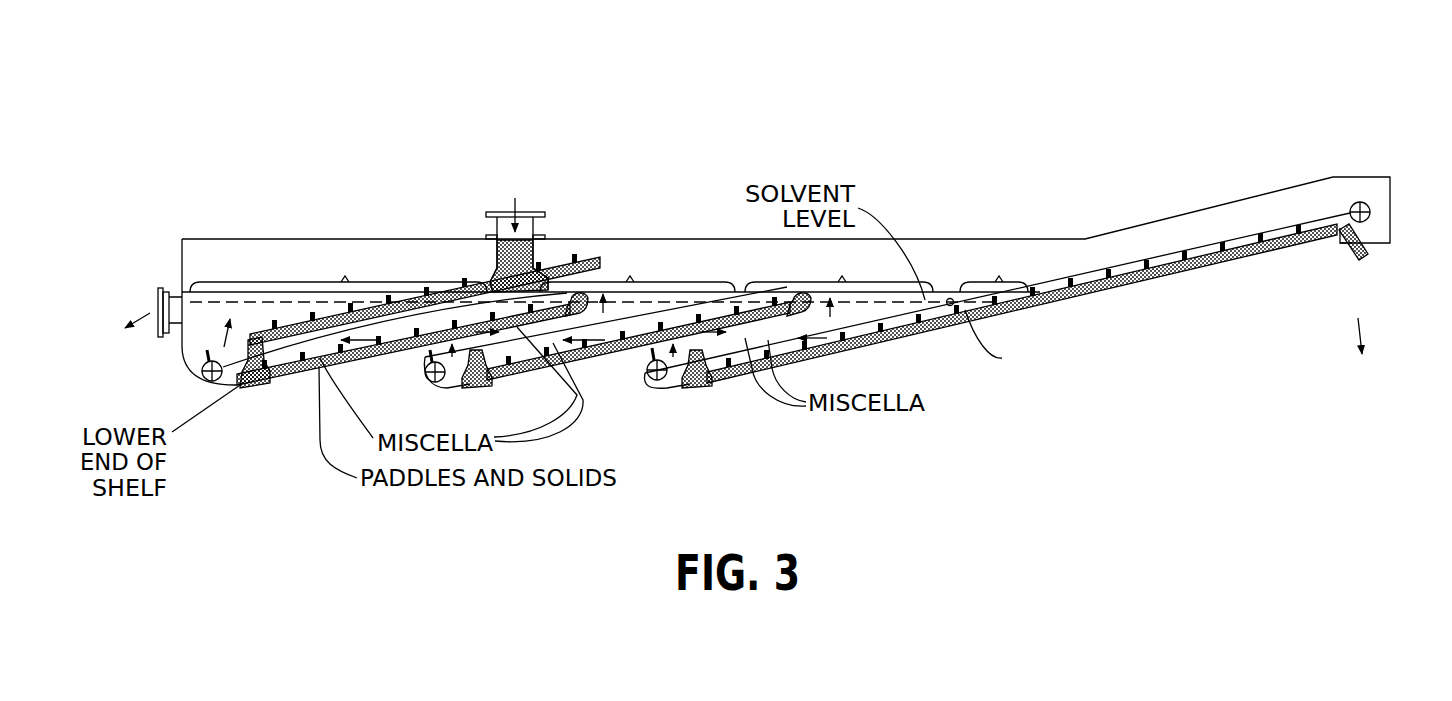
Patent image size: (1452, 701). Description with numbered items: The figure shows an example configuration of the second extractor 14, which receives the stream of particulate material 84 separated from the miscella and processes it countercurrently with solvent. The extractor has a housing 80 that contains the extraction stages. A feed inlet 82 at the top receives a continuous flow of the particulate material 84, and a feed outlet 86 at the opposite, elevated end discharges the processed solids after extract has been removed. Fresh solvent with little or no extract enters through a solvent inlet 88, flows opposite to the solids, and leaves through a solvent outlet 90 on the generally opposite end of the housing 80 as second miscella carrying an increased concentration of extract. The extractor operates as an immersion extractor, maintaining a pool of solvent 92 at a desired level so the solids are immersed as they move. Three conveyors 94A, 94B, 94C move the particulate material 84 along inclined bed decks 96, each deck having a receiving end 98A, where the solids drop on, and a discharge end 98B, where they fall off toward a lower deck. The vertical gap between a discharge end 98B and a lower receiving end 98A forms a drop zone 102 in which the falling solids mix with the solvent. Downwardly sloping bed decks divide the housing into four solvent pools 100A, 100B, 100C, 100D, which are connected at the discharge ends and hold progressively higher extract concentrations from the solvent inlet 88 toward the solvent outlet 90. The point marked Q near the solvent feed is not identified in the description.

The second extractor 14 is at (197, 130).
The housing 80 is at (182, 262).
The feed inlet 82 is at (532, 194).
The particulate material 84 is at (493, 262).
The feed outlet 86 is at (1383, 330).
The solvent inlet 88 is at (950, 298).
The solvent outlet 90 is at (158, 326).
The pool of solvent 92 is at (198, 292).
The conveyor 94A is at (206, 380).
The conveyor 94B is at (437, 388).
The conveyor 94C is at (663, 385).
The bed deck 96 is at (566, 268).
The receiving end 98A is at (249, 386).
The discharge end 98B is at (592, 298).
The solvent pool 100A is at (338, 269).
The solvent pool 100B is at (637, 269).
The solvent pool 100C is at (839, 271).
The solvent pool 100D is at (995, 270).
The drop zone 102 is at (486, 383).
The solvent feed point Q is at (947, 342).